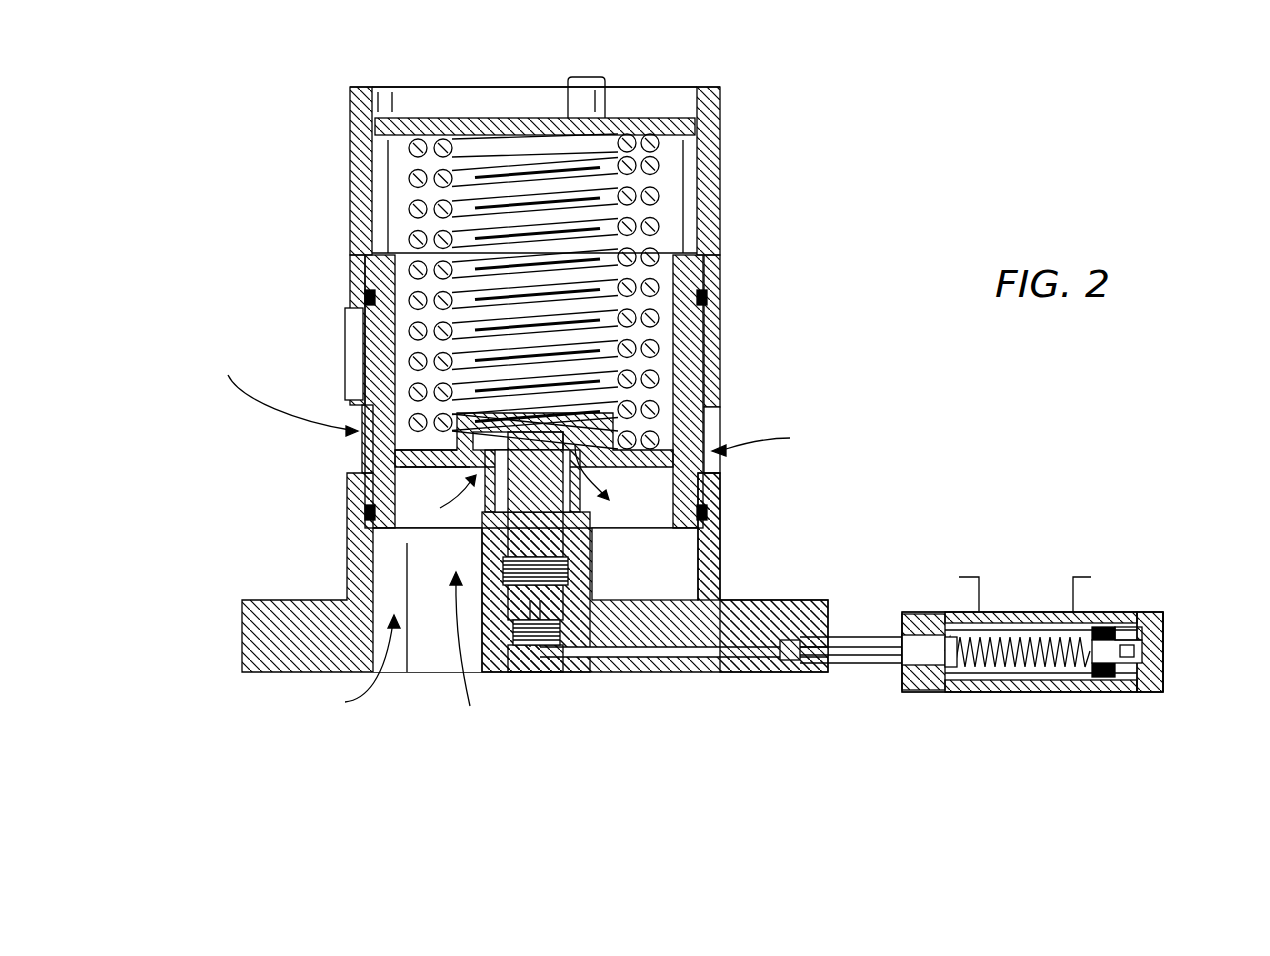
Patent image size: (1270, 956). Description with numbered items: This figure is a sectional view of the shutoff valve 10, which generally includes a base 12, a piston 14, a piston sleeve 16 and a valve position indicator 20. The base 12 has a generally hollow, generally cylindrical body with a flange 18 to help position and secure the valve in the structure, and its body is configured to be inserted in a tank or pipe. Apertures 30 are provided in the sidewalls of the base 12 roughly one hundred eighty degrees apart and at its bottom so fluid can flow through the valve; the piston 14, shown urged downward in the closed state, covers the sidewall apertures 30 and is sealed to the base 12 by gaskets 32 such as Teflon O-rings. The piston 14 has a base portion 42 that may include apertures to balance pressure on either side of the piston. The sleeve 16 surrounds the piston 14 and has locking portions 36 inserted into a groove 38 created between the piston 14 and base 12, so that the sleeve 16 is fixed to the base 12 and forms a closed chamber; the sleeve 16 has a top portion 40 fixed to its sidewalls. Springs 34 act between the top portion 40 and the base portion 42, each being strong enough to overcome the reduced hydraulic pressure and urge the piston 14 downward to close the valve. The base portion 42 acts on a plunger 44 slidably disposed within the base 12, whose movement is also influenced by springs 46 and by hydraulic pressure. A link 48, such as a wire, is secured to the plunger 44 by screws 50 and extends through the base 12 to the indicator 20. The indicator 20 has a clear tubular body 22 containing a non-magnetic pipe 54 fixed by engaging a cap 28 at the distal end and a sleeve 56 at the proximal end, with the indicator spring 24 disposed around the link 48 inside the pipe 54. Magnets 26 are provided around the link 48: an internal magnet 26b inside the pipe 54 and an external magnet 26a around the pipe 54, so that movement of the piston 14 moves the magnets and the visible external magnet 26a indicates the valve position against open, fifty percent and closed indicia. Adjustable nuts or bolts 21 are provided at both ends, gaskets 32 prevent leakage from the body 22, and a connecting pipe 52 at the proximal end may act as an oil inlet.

The shutoff valve 10 is at (318, 92).
The base 12 is at (738, 543).
The piston 14 is at (702, 447).
The piston sleeve 16 is at (722, 204).
The flange 18 is at (791, 602).
The valve position indicator 20 is at (1055, 703).
The adjustable nuts or bolts 21 is at (915, 612).
The body 22 is at (1140, 612).
The valve position indicator spring 24 is at (1000, 665).
The magnets 26 is at (1103, 683).
The external magnet 26a is at (1103, 680).
The internal magnet 26b is at (1142, 610).
The cap 28 is at (1166, 646).
The apertures 30 is at (364, 427).
The gaskets 32 is at (368, 297).
The springs 34 is at (440, 238).
The locking portions 36 is at (720, 320).
The groove 38 is at (360, 318).
The top portion 40 is at (642, 118).
The base portion 42 is at (497, 440).
The plunger 44 is at (467, 462).
The springs 46 is at (525, 645).
The link 48 is at (555, 675).
The screws 50 is at (582, 658).
The connecting pipe 52 is at (882, 668).
The pipe 54 is at (993, 668).
The sleeve 56 is at (960, 612).